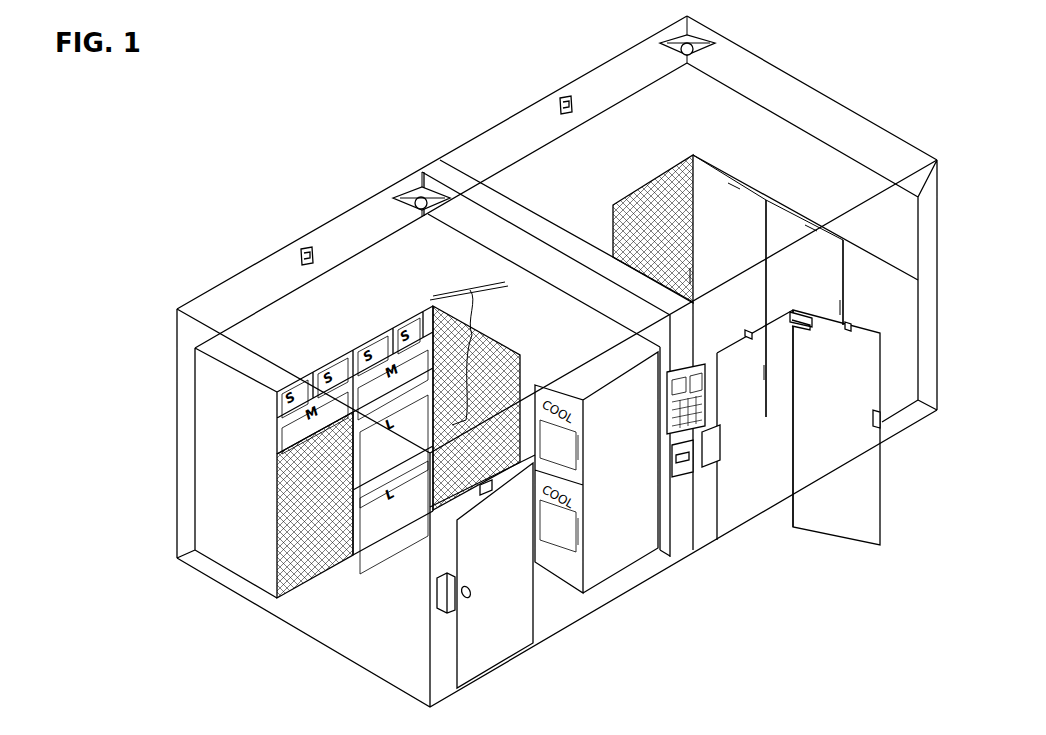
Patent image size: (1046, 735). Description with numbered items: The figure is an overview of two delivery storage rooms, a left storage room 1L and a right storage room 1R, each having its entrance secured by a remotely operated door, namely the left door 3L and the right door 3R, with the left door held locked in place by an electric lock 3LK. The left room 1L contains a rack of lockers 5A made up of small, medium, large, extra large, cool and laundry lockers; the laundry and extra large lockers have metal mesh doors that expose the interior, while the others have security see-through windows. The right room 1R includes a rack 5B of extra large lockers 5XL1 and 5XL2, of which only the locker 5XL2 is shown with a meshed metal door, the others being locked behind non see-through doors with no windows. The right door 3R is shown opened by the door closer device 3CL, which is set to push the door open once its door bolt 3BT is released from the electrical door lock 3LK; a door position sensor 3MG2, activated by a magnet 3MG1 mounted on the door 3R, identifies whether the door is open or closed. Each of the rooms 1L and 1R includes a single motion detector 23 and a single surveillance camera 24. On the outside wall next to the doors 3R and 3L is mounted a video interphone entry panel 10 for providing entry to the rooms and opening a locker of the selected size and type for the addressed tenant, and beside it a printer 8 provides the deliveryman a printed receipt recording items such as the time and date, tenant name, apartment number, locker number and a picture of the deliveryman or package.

The left storage room 1L is at (266, 232).
The right storage room 1R is at (866, 96).
The motion detector 23 is at (306, 247).
The surveillance camera 24 is at (417, 190).
The rack of lockers 5A is at (402, 295).
The rack of extra large lockers 5B is at (638, 152).
The extra large locker 5XL2 is at (640, 196).
The extra large locker 5XL1 is at (790, 225).
The door position sensor 3MG2 is at (748, 330).
The magnet 3MG1 is at (848, 324).
The door closer device 3CL is at (801, 329).
The door bolt 3BT is at (878, 427).
The right door 3R is at (870, 491).
The left door 3L is at (487, 645).
The electric lock 3LK is at (438, 592).
The video interphone entry panel 10 is at (712, 391).
The printer 8 is at (678, 472).